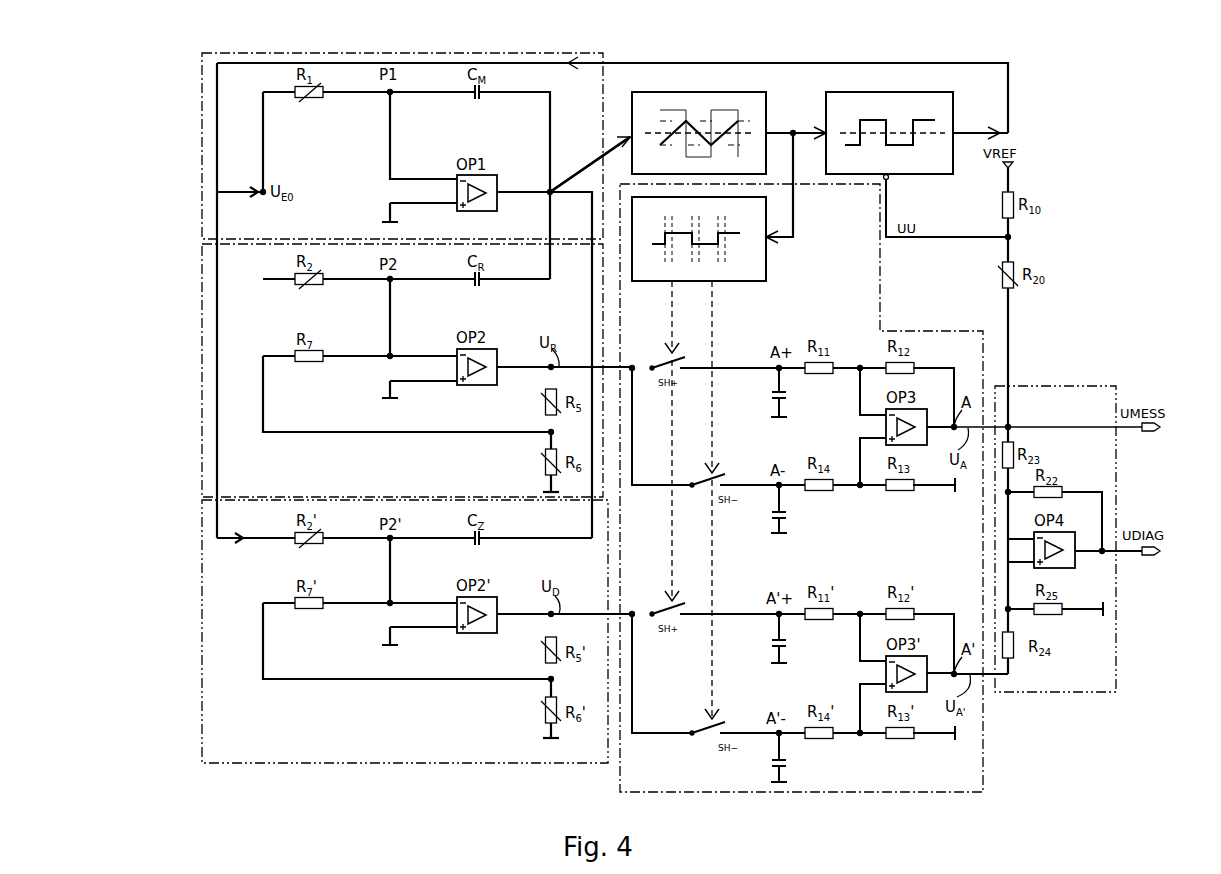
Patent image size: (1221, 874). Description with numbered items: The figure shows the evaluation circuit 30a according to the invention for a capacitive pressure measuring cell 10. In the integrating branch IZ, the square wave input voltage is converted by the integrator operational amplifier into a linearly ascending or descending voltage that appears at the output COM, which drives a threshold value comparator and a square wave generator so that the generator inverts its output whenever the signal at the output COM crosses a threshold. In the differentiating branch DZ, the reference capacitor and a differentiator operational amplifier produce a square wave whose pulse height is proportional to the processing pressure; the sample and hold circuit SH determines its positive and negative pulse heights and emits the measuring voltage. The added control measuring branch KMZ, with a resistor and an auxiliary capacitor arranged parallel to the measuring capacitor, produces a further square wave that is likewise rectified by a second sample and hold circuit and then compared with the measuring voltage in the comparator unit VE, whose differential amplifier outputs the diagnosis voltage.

The pressure measuring cell 10 is at (562, 112).
The evaluation circuit 30a is at (1117, 123).
The integrating branch IZ is at (202, 148).
The differentiating branch DZ is at (202, 418).
The control measuring branch KMZ is at (202, 656).
The sample and hold circuit SH is at (904, 313).
The comparator unit VE is at (1102, 692).
The output of the integrating branch COM is at (553, 187).